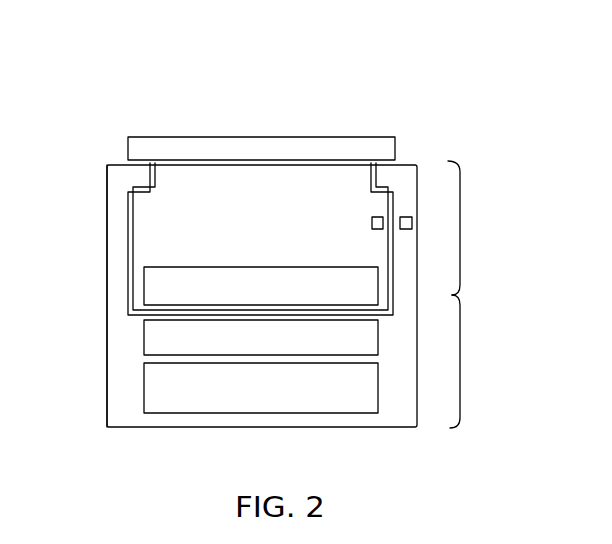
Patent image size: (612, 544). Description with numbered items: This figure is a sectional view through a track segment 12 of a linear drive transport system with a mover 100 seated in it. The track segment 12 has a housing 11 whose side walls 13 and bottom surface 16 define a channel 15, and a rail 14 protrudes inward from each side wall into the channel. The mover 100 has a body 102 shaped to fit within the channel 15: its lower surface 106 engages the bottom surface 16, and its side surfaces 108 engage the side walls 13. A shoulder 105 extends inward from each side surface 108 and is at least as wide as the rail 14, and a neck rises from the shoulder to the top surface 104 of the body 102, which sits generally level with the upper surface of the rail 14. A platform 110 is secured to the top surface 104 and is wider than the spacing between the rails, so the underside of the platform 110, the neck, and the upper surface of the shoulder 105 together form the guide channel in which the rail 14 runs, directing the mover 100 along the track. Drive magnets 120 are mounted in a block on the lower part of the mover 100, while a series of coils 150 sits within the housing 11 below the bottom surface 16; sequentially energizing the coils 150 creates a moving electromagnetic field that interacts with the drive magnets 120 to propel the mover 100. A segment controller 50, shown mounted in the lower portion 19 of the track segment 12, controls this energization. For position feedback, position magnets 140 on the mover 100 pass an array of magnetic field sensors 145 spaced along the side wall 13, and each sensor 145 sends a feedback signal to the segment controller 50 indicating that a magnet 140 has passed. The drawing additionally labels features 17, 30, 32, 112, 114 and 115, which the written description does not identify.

The housing 11 is at (122, 403).
The track segment 12 is at (107, 330).
The side wall 13 is at (126, 243).
The rail 14 is at (132, 177).
The channel 15 is at (137, 198).
The bottom surface 16 is at (133, 318).
The upper housing portion 17 is at (460, 232).
The lower portion 19 is at (460, 358).
The gap 30 is at (136, 193).
The flange 32 is at (156, 182).
The segment controller 50 is at (277, 399).
The mover 100 is at (160, 133).
The body 102 is at (249, 180).
The top surface 104 is at (333, 165).
The shoulder 105 is at (370, 196).
The lower surface 106 is at (388, 316).
The side surfaces 108 is at (393, 268).
The platform 110 is at (372, 162).
The lid cover 112 is at (204, 137).
The lid rim 114 is at (378, 163).
The lid hinge 115 is at (372, 158).
The drive magnets 120 is at (210, 283).
The position magnets 140 is at (378, 217).
The sensors 145 is at (403, 217).
The coils 150 is at (277, 349).